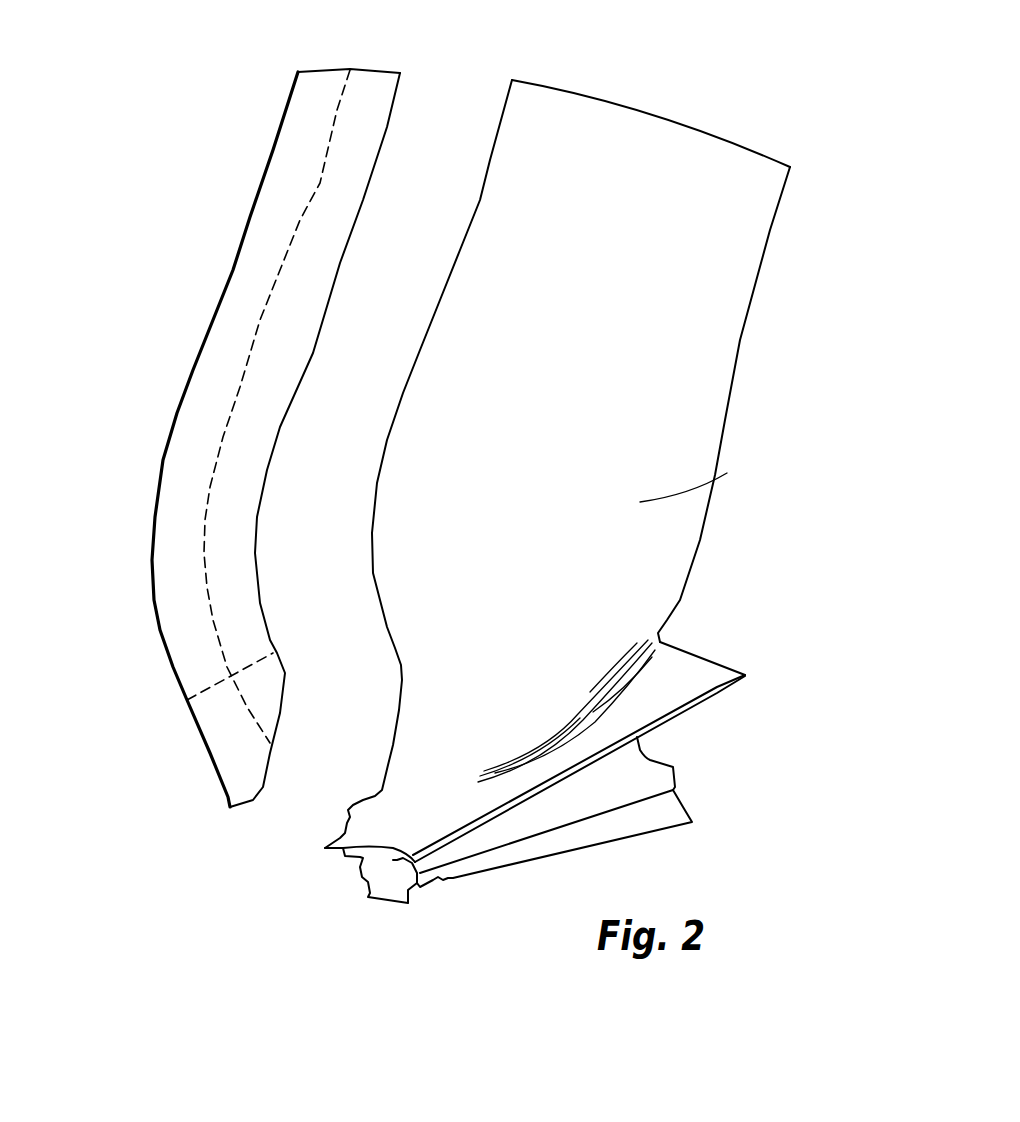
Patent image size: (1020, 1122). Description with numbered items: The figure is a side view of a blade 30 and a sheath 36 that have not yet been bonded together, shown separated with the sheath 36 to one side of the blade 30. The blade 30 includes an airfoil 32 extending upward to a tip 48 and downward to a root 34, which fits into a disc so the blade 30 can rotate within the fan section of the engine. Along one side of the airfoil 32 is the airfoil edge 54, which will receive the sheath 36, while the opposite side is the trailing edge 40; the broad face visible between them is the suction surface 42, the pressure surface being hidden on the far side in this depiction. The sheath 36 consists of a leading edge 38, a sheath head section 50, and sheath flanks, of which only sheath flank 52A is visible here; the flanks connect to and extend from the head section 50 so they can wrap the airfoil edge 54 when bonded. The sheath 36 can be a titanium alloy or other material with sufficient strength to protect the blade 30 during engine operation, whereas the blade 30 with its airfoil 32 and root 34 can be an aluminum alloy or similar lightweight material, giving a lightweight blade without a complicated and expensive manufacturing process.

The blade 30 is at (605, 473).
The airfoil 32 is at (605, 446).
The root 34 is at (711, 801).
The sheath 36 is at (233, 406).
The leading edge 38 is at (177, 403).
The trailing edge 40 is at (735, 407).
The suction surface 42 is at (727, 473).
The tip 48 is at (567, 92).
The sheath head section 50 is at (292, 167).
The sheath flank 52A is at (375, 80).
The airfoil edge 54 is at (490, 167).